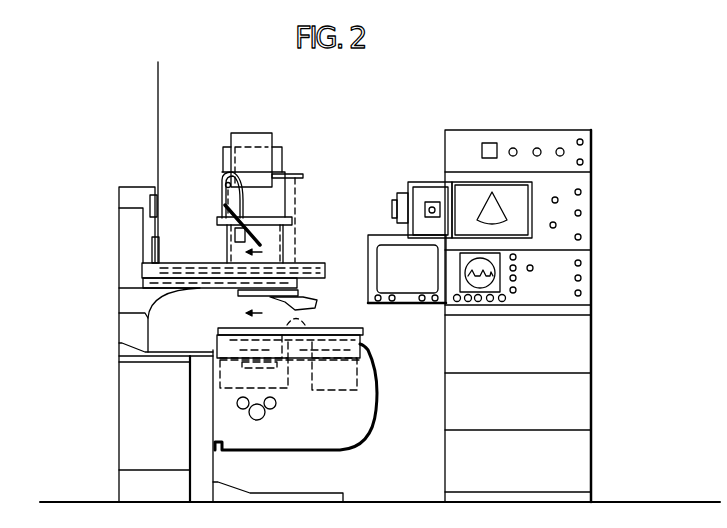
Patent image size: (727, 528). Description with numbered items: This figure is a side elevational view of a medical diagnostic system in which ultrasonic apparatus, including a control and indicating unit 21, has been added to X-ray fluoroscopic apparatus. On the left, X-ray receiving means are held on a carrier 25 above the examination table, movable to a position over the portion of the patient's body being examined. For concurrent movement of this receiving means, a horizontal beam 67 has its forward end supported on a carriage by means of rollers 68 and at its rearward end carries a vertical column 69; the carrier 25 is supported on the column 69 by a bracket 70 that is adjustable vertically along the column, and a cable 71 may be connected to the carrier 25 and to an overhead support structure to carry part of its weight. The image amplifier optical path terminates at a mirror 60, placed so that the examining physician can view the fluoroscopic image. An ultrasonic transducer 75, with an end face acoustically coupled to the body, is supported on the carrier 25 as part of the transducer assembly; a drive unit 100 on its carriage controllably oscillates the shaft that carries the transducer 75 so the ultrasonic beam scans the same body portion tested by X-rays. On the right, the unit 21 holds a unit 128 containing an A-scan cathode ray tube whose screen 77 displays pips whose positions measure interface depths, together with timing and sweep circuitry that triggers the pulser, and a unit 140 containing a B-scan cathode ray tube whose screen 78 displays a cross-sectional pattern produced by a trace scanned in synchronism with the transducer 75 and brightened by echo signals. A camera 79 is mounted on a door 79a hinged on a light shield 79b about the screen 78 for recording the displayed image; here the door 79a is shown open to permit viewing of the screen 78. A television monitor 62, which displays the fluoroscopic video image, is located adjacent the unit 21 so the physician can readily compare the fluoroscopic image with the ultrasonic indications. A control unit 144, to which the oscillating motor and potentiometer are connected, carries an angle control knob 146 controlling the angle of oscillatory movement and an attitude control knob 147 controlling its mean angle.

The control and indicating unit 21 is at (591, 131).
The carrier 25 is at (329, 282).
The mirror 60 is at (260, 198).
The monitor 62 is at (407, 288).
The horizontal beam 67 is at (165, 355).
The rollers 68 is at (312, 394).
The vertical column 69 is at (119, 243).
The bracket 70 is at (174, 305).
The cable 71 is at (160, 108).
The transducer 75 is at (246, 296).
The screen 77 is at (478, 253).
The screen 78 is at (517, 222).
The camera 79 is at (402, 189).
The door 79a is at (396, 200).
The light shield 79b is at (532, 210).
The drive unit 100 is at (312, 305).
The unit 128 is at (587, 273).
The unit 140 is at (587, 203).
The control unit 144 is at (468, 143).
The angle control knob 146 is at (583, 162).
The attitude control knob 147 is at (583, 142).